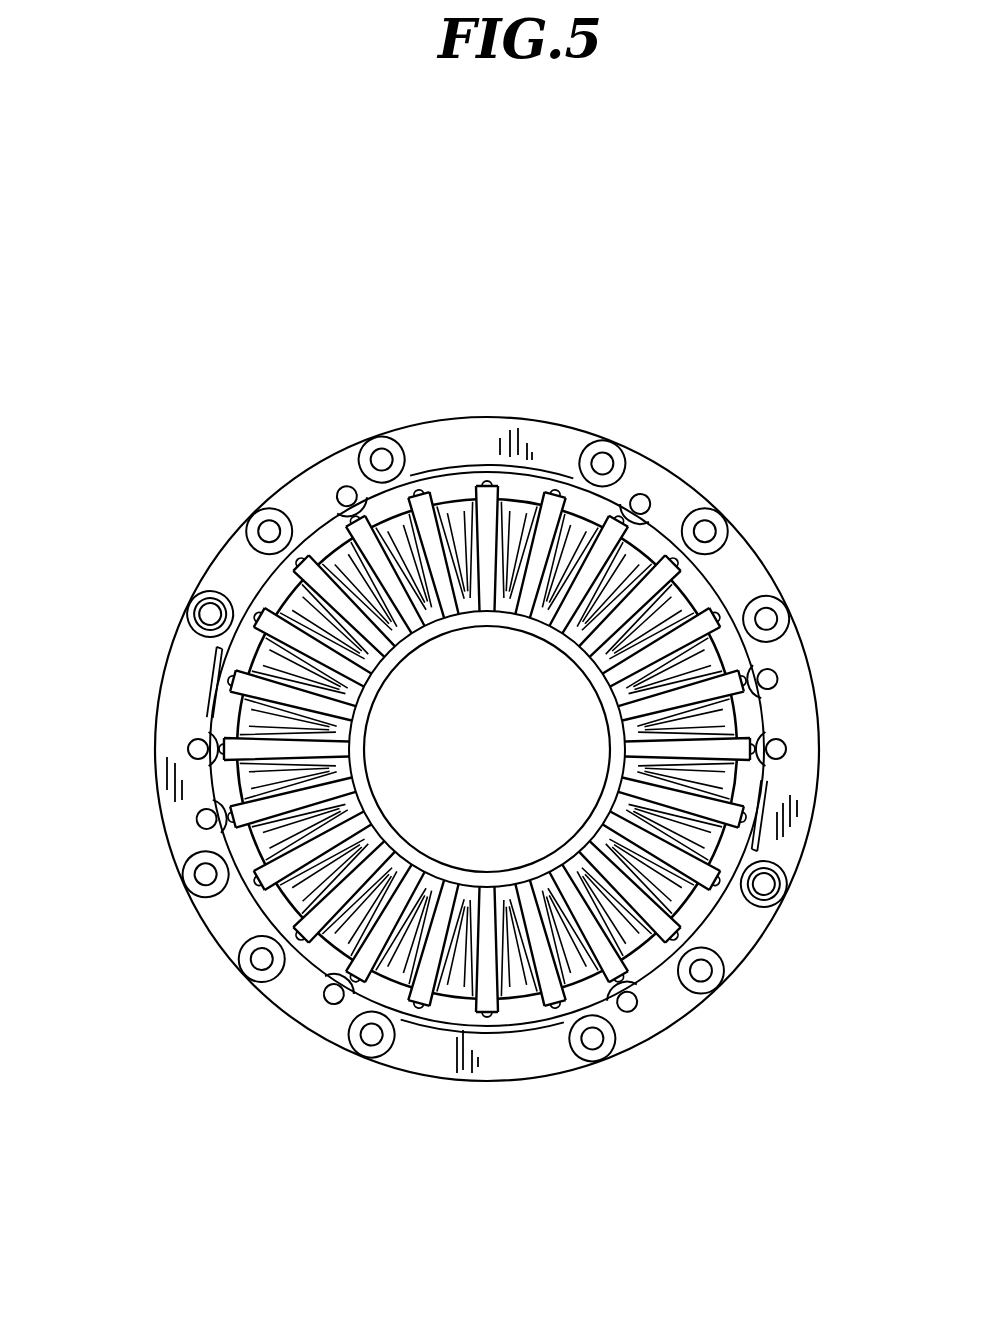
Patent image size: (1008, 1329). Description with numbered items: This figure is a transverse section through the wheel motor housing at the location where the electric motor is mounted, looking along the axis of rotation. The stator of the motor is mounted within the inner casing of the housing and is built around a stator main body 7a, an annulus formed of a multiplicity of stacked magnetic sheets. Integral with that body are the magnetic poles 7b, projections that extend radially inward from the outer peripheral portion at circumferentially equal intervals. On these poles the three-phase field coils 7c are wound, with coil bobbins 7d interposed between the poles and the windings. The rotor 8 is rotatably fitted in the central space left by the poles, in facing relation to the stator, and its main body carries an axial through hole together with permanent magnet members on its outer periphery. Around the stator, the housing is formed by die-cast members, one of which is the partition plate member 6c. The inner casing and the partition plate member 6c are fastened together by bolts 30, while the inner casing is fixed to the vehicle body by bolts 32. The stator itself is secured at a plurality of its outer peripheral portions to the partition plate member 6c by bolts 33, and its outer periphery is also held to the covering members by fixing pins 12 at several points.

The partition plate member 6c is at (177, 713).
The stator main body 7a is at (225, 705).
The magnetic poles 7b is at (257, 608).
The field coils 7c is at (332, 545).
The coil bobbins 7d is at (473, 500).
The rotor 8 is at (512, 820).
The fixing pins 12 is at (267, 960).
The bolts 30 is at (617, 460).
The bolts 32 is at (253, 530).
The bolts 33 is at (778, 750).